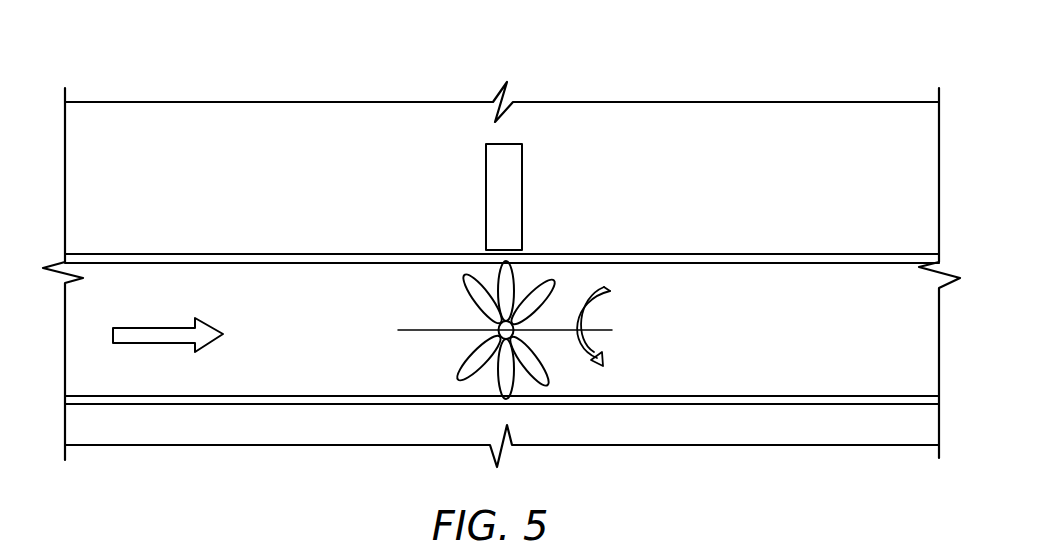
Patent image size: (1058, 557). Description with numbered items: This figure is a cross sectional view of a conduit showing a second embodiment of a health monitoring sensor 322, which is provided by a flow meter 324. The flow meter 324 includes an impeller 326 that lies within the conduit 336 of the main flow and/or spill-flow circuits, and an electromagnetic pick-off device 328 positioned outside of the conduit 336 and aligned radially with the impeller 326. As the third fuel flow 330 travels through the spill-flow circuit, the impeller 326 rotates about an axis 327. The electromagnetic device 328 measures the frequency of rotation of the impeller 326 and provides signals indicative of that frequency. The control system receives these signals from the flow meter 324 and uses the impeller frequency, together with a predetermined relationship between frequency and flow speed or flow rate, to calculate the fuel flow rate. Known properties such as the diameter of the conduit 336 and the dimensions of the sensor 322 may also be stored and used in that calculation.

The health monitoring sensor 322 is at (136, 93).
The flow meter 324 is at (595, 220).
The impeller 326 is at (425, 308).
The axis 327 is at (425, 332).
The electromagnetic pick-off device 328 is at (560, 173).
The third fuel flow 330 is at (152, 325).
The conduit 336 is at (260, 258).